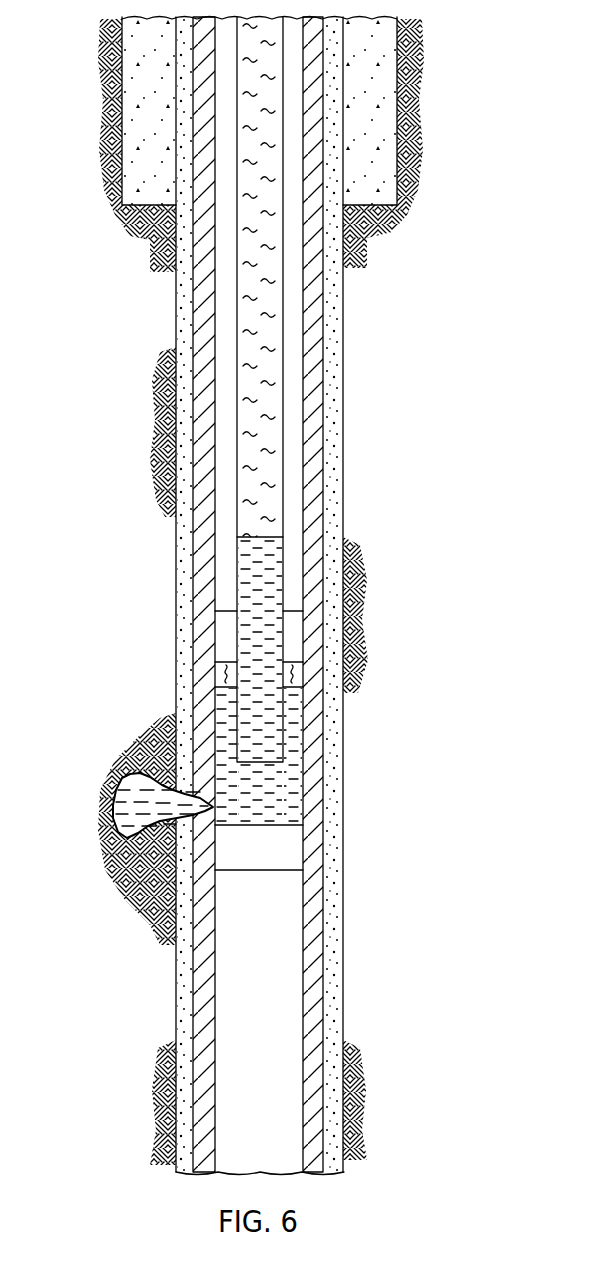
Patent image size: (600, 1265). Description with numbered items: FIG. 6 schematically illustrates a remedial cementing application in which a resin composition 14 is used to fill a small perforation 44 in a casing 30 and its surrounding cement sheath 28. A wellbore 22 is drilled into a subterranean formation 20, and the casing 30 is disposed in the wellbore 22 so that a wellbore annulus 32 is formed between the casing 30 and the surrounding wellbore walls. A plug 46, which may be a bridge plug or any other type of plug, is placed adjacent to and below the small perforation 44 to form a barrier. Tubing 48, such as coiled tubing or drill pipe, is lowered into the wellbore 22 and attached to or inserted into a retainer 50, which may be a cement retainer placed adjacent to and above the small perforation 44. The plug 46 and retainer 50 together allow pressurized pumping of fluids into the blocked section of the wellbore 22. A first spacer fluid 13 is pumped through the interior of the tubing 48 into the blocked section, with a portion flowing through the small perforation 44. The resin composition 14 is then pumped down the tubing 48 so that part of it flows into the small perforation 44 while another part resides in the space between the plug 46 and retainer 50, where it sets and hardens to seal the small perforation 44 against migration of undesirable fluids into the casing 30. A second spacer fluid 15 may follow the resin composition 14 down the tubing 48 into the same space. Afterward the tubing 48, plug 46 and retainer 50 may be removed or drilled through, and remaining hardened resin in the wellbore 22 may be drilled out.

The first spacer fluid 13 is at (302, 668).
The resin composition 14 is at (293, 725).
The second spacer fluid 15 is at (265, 305).
The subterranean formation 20 is at (105, 807).
The wellbore 22 is at (165, 621).
The cement sheath 28 is at (153, 873).
The casing 30 is at (202, 398).
The wellbore annulus 32 is at (225, 290).
The small perforation 44 is at (120, 856).
The plug 46 is at (287, 852).
The tubing 48 is at (235, 247).
The retainer 50 is at (298, 630).